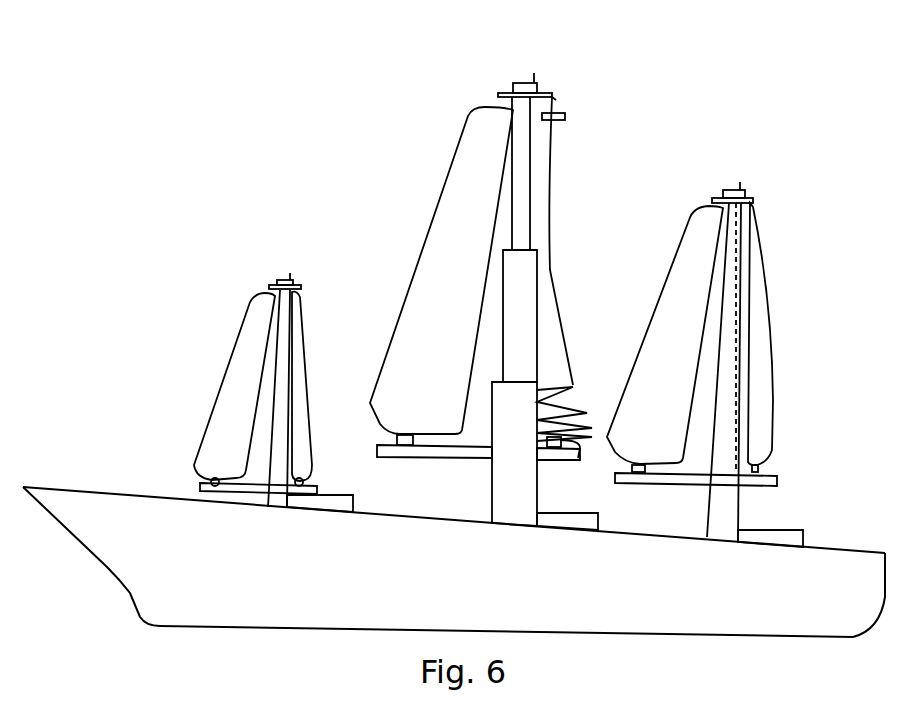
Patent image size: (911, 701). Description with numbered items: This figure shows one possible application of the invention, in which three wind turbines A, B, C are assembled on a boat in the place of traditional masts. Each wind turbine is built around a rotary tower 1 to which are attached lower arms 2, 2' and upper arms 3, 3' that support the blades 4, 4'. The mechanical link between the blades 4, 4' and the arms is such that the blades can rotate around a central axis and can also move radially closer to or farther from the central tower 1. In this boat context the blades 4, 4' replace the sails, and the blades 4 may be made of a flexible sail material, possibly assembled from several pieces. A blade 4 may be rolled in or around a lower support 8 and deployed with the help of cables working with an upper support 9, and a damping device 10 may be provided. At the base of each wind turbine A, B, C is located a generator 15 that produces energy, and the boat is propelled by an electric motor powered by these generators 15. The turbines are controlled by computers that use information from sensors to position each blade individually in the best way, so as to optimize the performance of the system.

The rotary tower 1 is at (292, 320).
The lower arm 2 is at (460, 480).
The lower arm 2' is at (563, 482).
The upper arm 3 is at (507, 145).
The upper arm 3' is at (547, 155).
The blade 4 is at (433, 296).
The blade 4' is at (567, 291).
The lower support 8 is at (581, 460).
The upper support 9 is at (552, 100).
The damping device 10 is at (566, 116).
The generator 15 is at (565, 520).
The wind turbine A is at (237, 327).
The wind turbine B is at (578, 147).
The wind turbine C is at (778, 272).